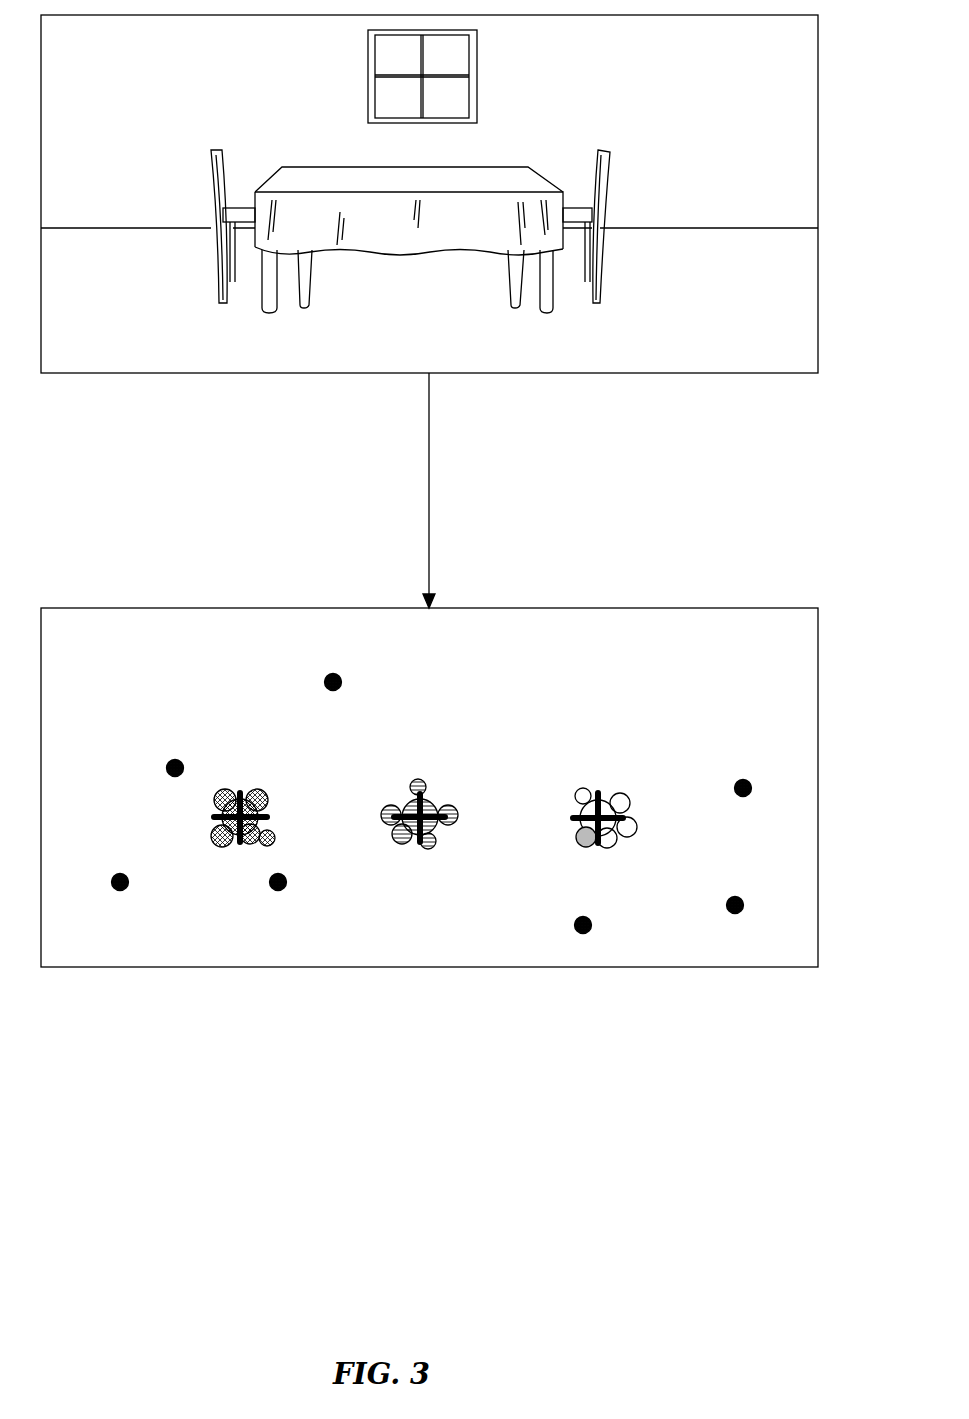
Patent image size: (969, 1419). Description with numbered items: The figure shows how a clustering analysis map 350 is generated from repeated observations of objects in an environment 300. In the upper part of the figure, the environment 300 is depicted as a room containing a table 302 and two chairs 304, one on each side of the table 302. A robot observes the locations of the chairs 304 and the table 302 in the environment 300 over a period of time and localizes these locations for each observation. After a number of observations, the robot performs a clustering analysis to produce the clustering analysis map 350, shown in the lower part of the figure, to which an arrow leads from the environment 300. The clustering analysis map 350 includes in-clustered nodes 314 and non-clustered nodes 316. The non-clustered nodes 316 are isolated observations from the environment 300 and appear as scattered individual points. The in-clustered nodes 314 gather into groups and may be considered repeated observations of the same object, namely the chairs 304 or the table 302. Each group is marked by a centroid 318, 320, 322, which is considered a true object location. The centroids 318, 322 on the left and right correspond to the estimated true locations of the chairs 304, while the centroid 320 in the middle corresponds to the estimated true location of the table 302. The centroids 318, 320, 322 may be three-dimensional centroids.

The environment 300 is at (818, 291).
The table 302 is at (405, 234).
The chair 304 is at (613, 153).
The in-clustered node 314 is at (428, 846).
The non-clustered node 316 is at (288, 877).
The centroid 318 is at (245, 795).
The centroid 320 is at (441, 795).
The centroid 322 is at (601, 793).
The clustering analysis map 350 is at (818, 760).